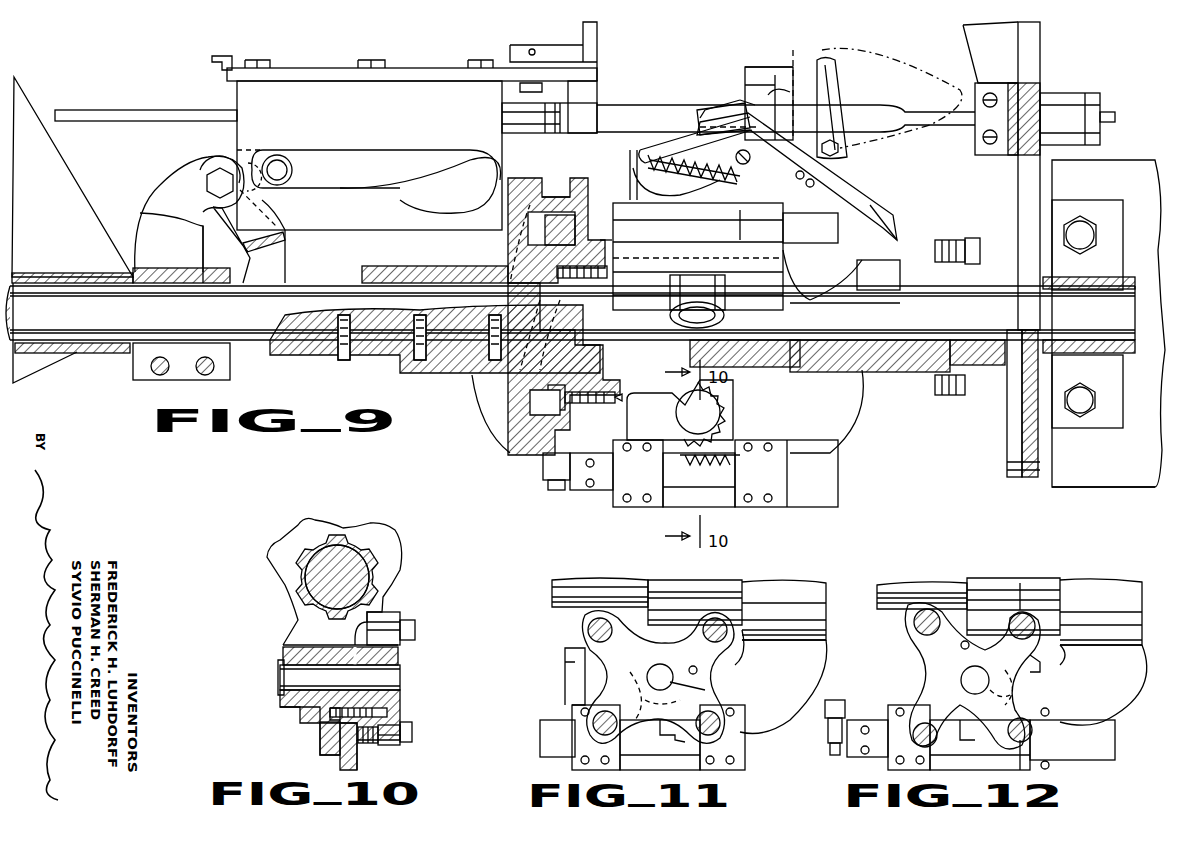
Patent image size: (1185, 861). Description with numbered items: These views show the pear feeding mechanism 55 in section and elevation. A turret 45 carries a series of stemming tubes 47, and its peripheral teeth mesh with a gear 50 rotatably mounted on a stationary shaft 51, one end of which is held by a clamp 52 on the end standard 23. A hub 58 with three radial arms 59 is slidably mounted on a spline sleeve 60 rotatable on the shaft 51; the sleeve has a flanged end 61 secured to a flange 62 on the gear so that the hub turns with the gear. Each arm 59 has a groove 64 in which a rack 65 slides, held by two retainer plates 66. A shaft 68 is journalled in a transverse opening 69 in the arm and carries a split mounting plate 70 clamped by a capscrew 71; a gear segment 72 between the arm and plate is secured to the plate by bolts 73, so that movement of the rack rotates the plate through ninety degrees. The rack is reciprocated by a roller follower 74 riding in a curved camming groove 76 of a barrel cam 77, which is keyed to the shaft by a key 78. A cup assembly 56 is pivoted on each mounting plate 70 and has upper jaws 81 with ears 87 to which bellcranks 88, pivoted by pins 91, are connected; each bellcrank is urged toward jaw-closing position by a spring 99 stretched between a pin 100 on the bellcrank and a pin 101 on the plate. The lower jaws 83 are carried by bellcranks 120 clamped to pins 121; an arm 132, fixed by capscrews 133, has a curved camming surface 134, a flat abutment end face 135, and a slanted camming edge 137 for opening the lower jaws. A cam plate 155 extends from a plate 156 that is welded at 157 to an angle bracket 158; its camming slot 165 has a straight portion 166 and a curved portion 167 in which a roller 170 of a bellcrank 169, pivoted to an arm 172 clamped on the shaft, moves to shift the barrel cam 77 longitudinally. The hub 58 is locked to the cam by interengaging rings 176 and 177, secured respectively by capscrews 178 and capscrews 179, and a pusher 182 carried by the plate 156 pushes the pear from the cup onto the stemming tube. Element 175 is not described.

In FIG. 9, the end standard 23 is at (1118, 482).
In FIG. 9, the turret 45 is at (1030, 36).
In FIG. 9, the stemming tube 47 is at (897, 112).
In FIG. 9, the gear 50 is at (1020, 444).
In FIG. 9, the shaft 51 is at (570, 313).
In FIG. 10, the shaft 51 is at (355, 578).
In FIG. 9, the clamp 52 is at (1112, 266).
In FIG. 9, the pear feeding mechanism 55 is at (470, 425).
In FIG. 10, the pear feeding mechanism 55 is at (285, 618).
In FIG. 11, the pear feeding mechanism 55 is at (780, 580).
In FIG. 12, the pear feeding mechanism 55 is at (985, 572).
In FIG. 9, the cup assembly 56 is at (775, 75).
In FIG. 10, the cup assembly 56 is at (402, 655).
In FIG. 11, the cup assembly 56 is at (595, 637).
In FIG. 12, the cup assembly 56 is at (930, 640).
In FIG. 9, the hub 58 is at (878, 270).
In FIG. 10, the hub 58 is at (290, 592).
In FIG. 11, the hub 58 is at (818, 600).
In FIG. 12, the hub 58 is at (1125, 592).
In FIG. 9, the arm 59 is at (830, 286).
In FIG. 10, the arm 59 is at (325, 736).
In FIG. 11, the arm 59 is at (812, 664).
In FIG. 12, the arm 59 is at (1124, 661).
In FIG. 9, the spline sleeve 60 is at (690, 352).
In FIG. 10, the spline sleeve 60 is at (385, 540).
In FIG. 9, the flanged end 61 is at (943, 242).
In FIG. 9, the flange 62 is at (972, 243).
In FIG. 9, the groove 64 is at (725, 488).
In FIG. 10, the groove 64 is at (338, 752).
In FIG. 11, the groove 64 is at (668, 748).
In FIG. 12, the groove 64 is at (995, 740).
In FIG. 9, the rack 65 is at (600, 503).
In FIG. 10, the rack 65 is at (322, 746).
In FIG. 11, the rack 65 is at (540, 740).
In FIG. 12, the rack 65 is at (880, 725).
In FIG. 9, the retainer plate 66 is at (725, 473).
In FIG. 10, the retainer plate 66 is at (358, 765).
In FIG. 11, the retainer plate 66 is at (580, 750).
In FIG. 12, the retainer plate 66 is at (898, 752).
In FIG. 9, the shaft 68 is at (697, 315).
In FIG. 10, the shaft 68 is at (395, 678).
In FIG. 11, the shaft 68 is at (660, 672).
In FIG. 12, the shaft 68 is at (975, 680).
In FIG. 10, the transverse opening 69 is at (300, 700).
In FIG. 9, the mounting plate 70 is at (668, 200).
In FIG. 10, the mounting plate 70 is at (398, 705).
In FIG. 11, the mounting plate 70 is at (700, 671).
In FIG. 12, the mounting plate 70 is at (948, 668).
In FIG. 10, the capscrew 71 is at (395, 745).
In FIG. 11, the capscrew 71 is at (700, 695).
In FIG. 12, the capscrew 71 is at (1040, 672).
In FIG. 9, the gear segment 72 is at (735, 423).
In FIG. 10, the gear segment 72 is at (362, 680).
In FIG. 11, the gear segment 72 is at (655, 702).
In FIG. 12, the gear segment 72 is at (1020, 694).
In FIG. 9, the bolt 73 is at (728, 404).
In FIG. 10, the bolt 73 is at (330, 714).
In FIG. 9, the roller follower 74 is at (545, 460).
In FIG. 12, the roller follower 74 is at (838, 705).
In FIG. 9, the camming groove 76 is at (553, 197).
In FIG. 9, the barrel cam 77 is at (535, 172).
In FIG. 9, the key 78 is at (305, 355).
In FIG. 9, the upper jaw 81 is at (755, 73).
In FIG. 9, the lower jaw 83 is at (848, 70).
In FIG. 9, the ear 87 is at (760, 110).
In FIG. 9, the bellcrank 88 is at (692, 138).
In FIG. 10, the pin 91 is at (415, 630).
In FIG. 11, the pin 91 is at (590, 627).
In FIG. 12, the pin 91 is at (913, 620).
In FIG. 9, the spring 99 is at (700, 206).
In FIG. 9, the pin 100 is at (640, 165).
In FIG. 9, the pin 101 is at (785, 215).
In FIG. 11, the pin 101 is at (560, 715).
In FIG. 12, the pin 101 is at (1045, 575).
In FIG. 9, the bellcrank 120 is at (850, 152).
In FIG. 10, the pin 121 is at (412, 730).
In FIG. 11, the pin 121 is at (607, 718).
In FIG. 12, the pin 121 is at (1034, 625).
In FIG. 9, the arm 132 is at (712, 110).
In FIG. 9, the capscrew 133 is at (840, 175).
In FIG. 9, the camming surface 134 is at (712, 105).
In FIG. 9, the abutment end face 135 is at (702, 125).
In FIG. 9, the camming edge 137 is at (875, 214).
In FIG. 9, the cam plate 155 is at (372, 120).
In FIG. 9, the plate 156 is at (330, 52).
In FIG. 9, the weld 157 is at (225, 82).
In FIG. 9, the angle bracket 158 is at (220, 65).
In FIG. 9, the camming slot 165 is at (405, 152).
In FIG. 9, the straight portion 166 is at (340, 185).
In FIG. 9, the curved portion 167 is at (448, 198).
In FIG. 9, the bellcrank 169 is at (282, 258).
In FIG. 9, the roller 170 is at (292, 170).
In FIG. 9, the arm 172 is at (184, 256).
In FIG. 9, the collar 175 is at (470, 385).
In FIG. 9, the ring 176 is at (612, 249).
In FIG. 9, the ring 177 is at (550, 330).
In FIG. 9, the capscrew 178 is at (607, 268).
In FIG. 9, the capscrew 179 is at (548, 396).
In FIG. 9, the pusher 182 is at (633, 115).